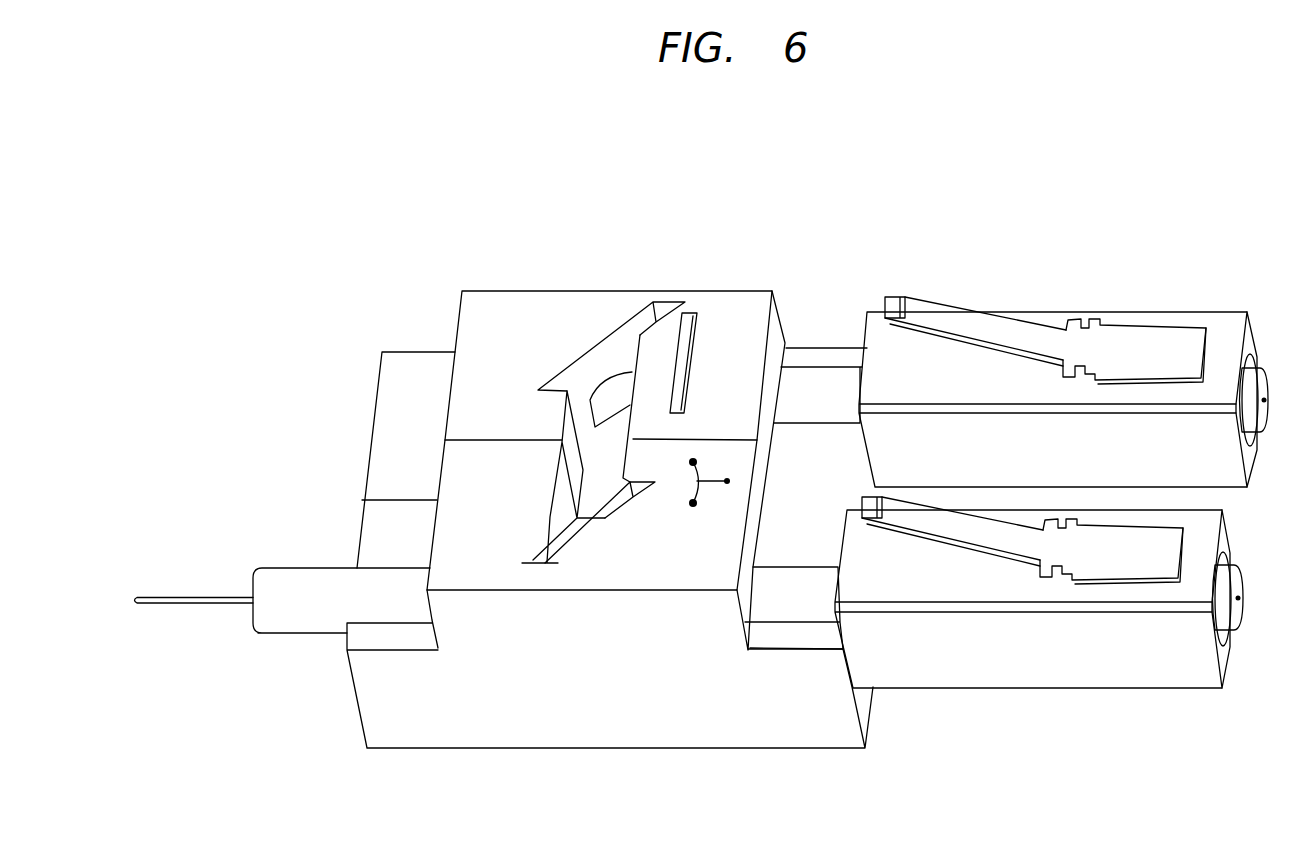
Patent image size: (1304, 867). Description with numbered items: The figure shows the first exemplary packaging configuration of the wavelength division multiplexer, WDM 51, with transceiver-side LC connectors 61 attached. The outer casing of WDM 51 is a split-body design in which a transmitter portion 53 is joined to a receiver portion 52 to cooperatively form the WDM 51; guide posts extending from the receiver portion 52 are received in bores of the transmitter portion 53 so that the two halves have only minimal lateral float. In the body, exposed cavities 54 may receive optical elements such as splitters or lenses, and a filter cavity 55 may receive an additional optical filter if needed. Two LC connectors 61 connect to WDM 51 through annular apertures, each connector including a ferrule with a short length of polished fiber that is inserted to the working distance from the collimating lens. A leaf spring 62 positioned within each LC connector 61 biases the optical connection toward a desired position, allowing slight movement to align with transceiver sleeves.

The WDM 51 is at (569, 220).
The receiver portion 52 is at (456, 302).
The transmitter portion 53 is at (545, 756).
The exposed cavities 54 is at (585, 346).
The filter cavity 55 is at (705, 361).
The LC connectors 61 is at (1037, 300).
The leaf spring 62 is at (893, 296).